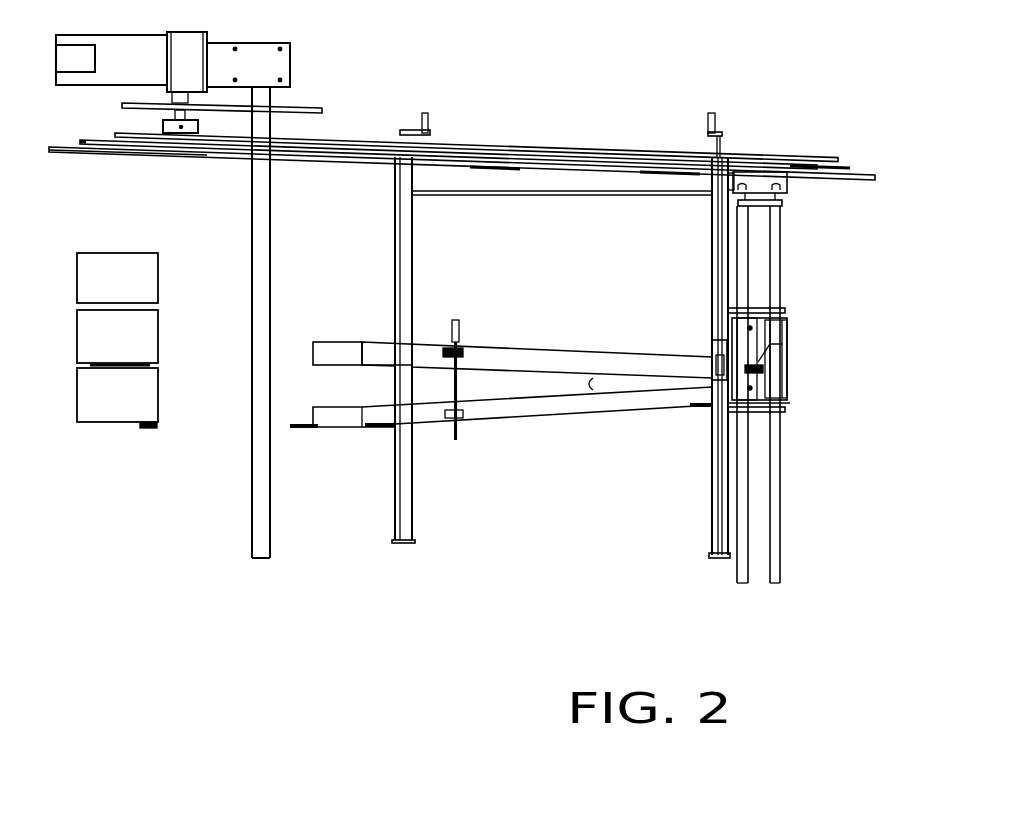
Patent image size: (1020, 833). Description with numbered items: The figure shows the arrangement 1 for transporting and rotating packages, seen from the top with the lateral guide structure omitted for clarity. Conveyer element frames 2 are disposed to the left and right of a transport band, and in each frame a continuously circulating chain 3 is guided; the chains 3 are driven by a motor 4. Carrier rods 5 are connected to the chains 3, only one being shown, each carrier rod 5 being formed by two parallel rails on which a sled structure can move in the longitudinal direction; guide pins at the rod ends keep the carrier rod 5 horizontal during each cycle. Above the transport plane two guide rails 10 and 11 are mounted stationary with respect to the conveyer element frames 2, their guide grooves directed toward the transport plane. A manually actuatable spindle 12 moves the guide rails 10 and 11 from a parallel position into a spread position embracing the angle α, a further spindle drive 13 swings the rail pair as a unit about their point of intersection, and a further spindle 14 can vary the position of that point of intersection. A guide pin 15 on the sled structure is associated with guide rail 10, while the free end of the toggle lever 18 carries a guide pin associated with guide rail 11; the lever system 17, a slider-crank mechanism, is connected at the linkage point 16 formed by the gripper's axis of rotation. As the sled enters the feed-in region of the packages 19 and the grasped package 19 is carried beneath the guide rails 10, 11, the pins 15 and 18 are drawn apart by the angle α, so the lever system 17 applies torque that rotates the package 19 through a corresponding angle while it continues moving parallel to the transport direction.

The arrangement 1 is at (478, 548).
The conveyer element frames 2 is at (477, 150).
The chain 3 is at (612, 147).
The motor 4 is at (248, 60).
The carrier rod 5 is at (777, 533).
The guide rail 10 is at (545, 367).
The guide rail 11 is at (560, 412).
The manually actuatable spindle 12 is at (458, 383).
The spindle drive 13 is at (408, 260).
The spindle 14 is at (712, 243).
The guide pin 15 is at (788, 365).
The linkage point 16 is at (782, 327).
The lever system 17 is at (788, 355).
The toggle lever 18 is at (780, 402).
The package 19 is at (122, 427).